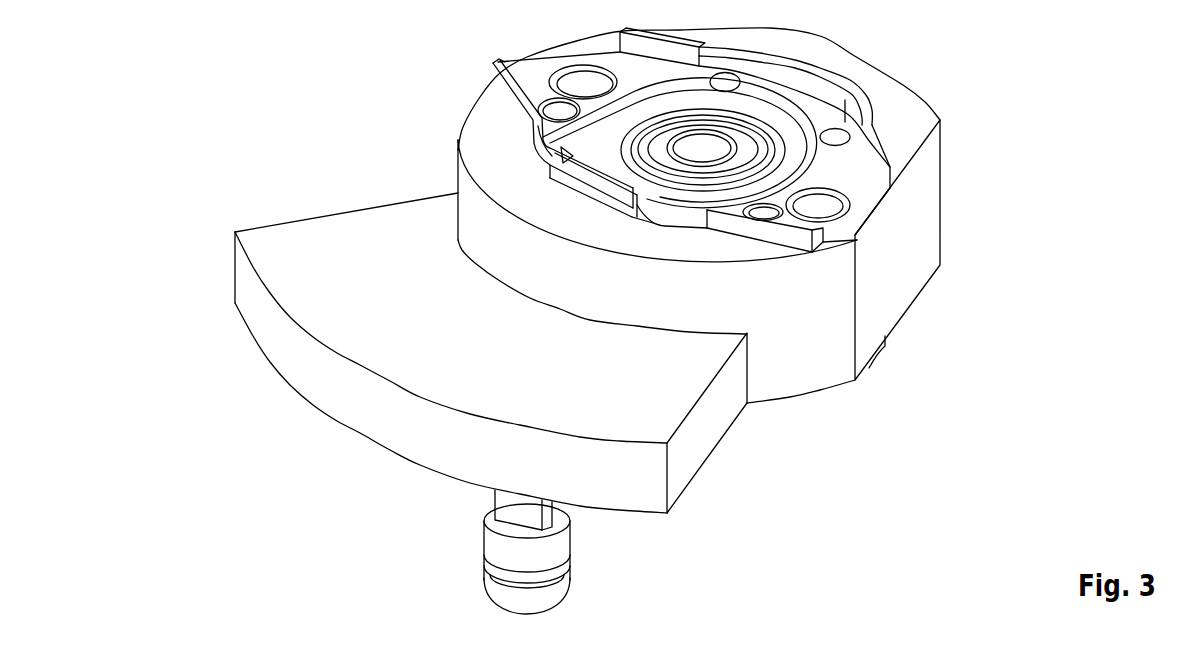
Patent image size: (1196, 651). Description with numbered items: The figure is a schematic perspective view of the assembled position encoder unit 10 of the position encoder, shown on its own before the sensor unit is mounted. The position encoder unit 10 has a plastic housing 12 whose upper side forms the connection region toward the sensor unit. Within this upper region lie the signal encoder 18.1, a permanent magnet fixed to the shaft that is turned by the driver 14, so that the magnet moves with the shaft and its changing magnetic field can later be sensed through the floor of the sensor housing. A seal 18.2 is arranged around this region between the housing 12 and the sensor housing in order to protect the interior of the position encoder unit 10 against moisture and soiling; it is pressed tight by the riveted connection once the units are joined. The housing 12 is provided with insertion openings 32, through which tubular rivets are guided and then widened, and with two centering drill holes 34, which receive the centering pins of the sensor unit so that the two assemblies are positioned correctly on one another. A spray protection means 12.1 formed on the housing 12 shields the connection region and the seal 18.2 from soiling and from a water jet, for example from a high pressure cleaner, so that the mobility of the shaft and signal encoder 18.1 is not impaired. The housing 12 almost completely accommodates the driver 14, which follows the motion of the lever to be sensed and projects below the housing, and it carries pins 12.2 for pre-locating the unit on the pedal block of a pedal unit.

The position encoder unit 10 is at (262, 81).
The housing 12 is at (920, 216).
The spray protection means 12.1 is at (620, 31).
The pins 12.2 is at (886, 352).
The driver 14 is at (517, 503).
The signal encoder 18.1 is at (545, 139).
The seal 18.2 is at (557, 150).
The insertion openings 32 is at (568, 83).
The centering drill holes 34 is at (546, 110).